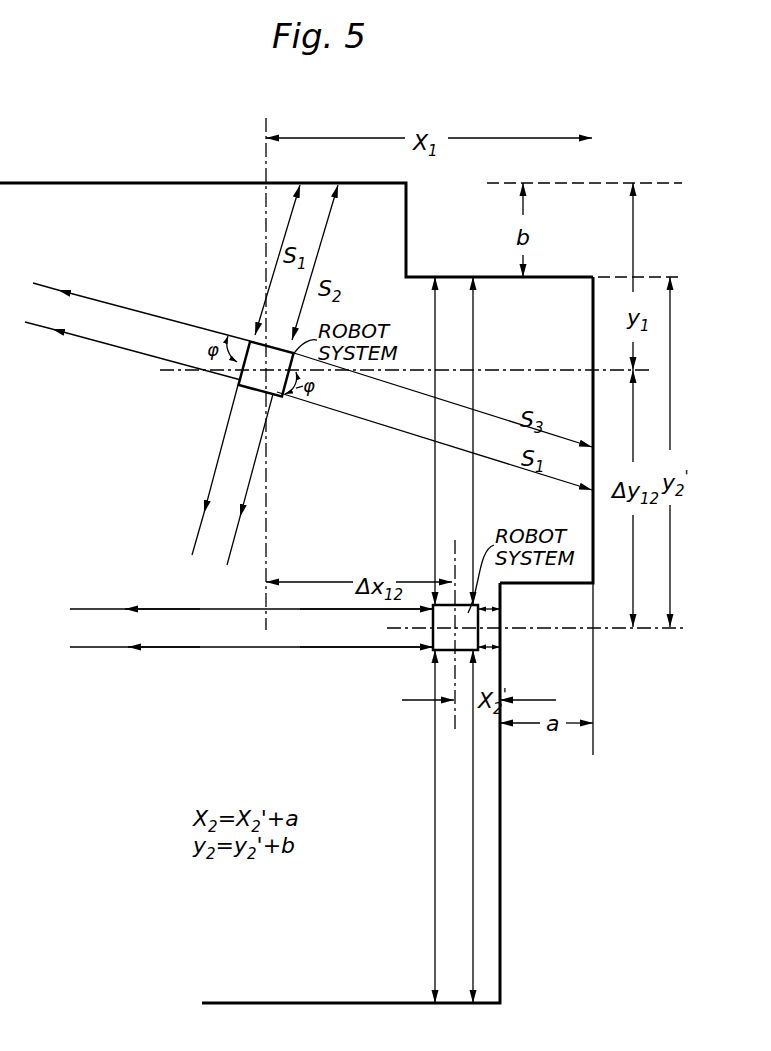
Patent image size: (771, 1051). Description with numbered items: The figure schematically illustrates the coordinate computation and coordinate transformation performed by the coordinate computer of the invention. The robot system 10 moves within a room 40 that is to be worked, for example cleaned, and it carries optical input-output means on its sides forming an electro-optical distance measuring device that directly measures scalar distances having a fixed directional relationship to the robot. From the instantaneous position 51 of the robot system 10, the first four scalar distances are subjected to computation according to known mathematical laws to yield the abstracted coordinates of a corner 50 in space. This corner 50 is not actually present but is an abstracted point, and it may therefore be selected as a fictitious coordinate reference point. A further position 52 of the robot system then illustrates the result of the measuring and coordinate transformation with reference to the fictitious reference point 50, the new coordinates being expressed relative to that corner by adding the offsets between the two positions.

The room 40 is at (120, 183).
The corner 50 is at (596, 183).
The robot system 10 is at (473, 652).
The instantaneous position 51 is at (242, 387).
The position 52 is at (453, 628).